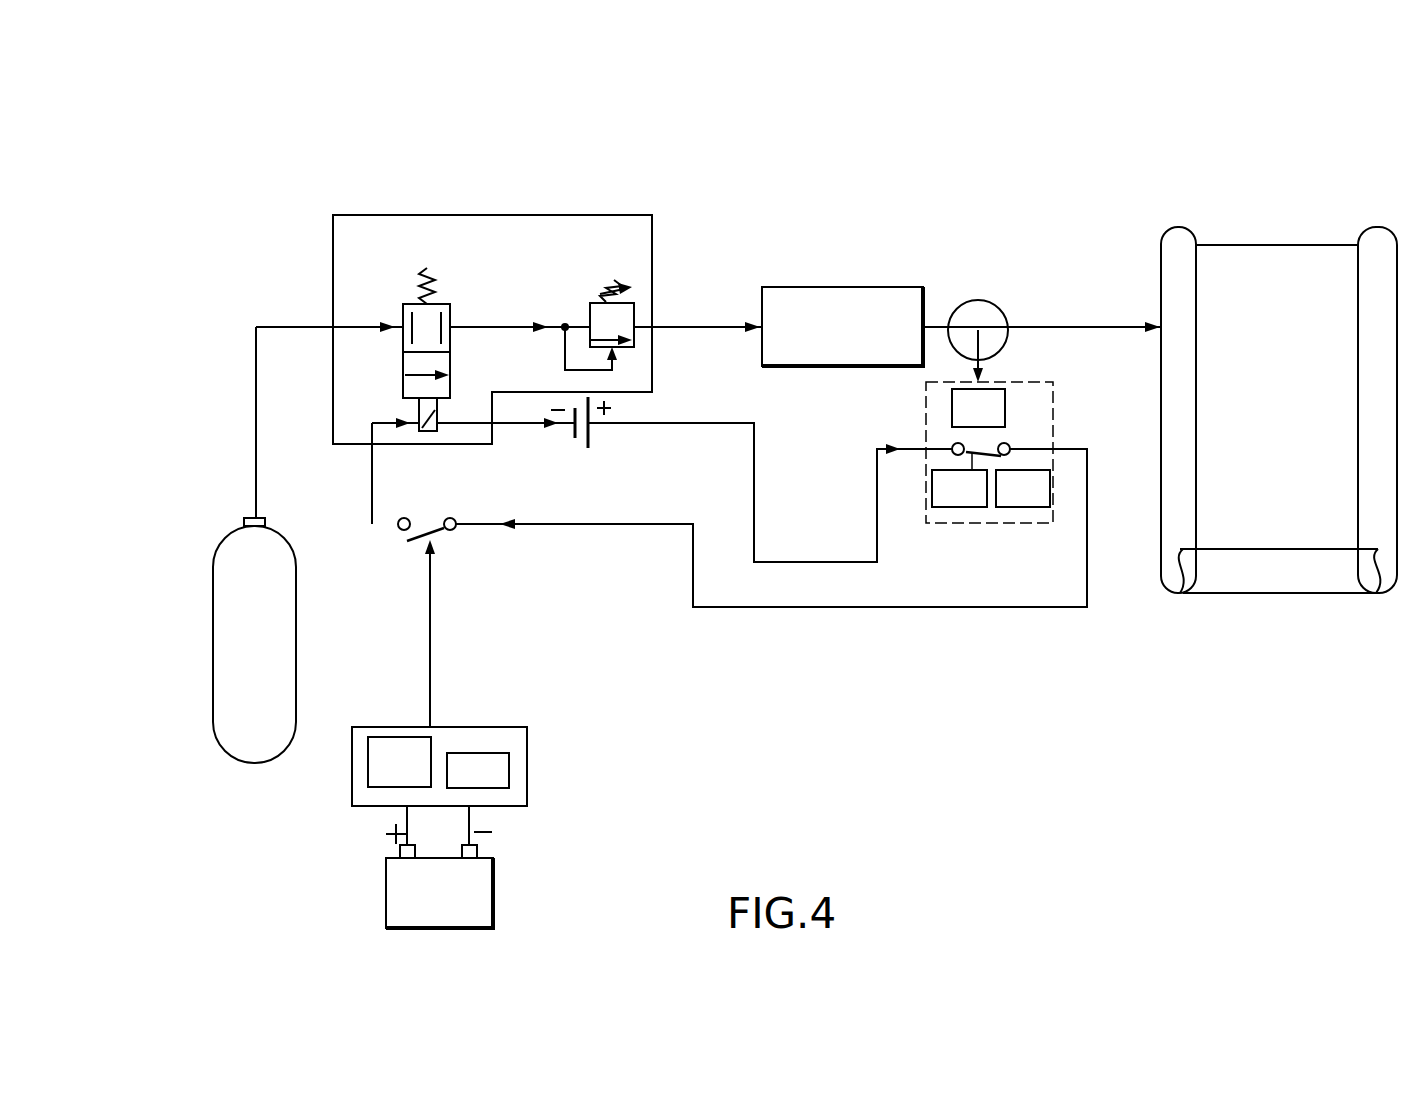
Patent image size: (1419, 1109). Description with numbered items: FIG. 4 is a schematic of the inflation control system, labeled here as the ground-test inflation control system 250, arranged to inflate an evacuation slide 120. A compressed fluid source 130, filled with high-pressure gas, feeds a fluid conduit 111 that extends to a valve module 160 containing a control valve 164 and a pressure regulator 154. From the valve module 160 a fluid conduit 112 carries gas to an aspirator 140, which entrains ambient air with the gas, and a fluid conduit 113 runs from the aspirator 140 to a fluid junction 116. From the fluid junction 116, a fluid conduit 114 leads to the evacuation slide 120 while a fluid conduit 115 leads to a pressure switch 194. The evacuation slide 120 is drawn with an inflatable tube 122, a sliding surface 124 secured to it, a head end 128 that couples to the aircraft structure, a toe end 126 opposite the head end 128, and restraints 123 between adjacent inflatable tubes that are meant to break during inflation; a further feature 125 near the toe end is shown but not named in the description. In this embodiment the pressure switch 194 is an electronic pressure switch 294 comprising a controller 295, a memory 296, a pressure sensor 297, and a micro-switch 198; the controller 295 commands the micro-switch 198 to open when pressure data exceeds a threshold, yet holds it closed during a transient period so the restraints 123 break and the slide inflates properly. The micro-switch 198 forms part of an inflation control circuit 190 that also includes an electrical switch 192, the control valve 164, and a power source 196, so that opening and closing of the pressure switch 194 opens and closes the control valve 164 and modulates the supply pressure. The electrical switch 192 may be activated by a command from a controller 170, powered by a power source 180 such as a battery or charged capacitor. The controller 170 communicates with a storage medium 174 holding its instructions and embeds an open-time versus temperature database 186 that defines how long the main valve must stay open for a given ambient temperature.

The ground-test inflation control system 250 is at (255, 233).
The fluid conduit 111 is at (256, 432).
The compressed fluid source 130 is at (262, 666).
The valve module 160 is at (384, 252).
The control valve 164 is at (453, 312).
The pressure regulator 154 is at (607, 320).
The fluid conduit 112 is at (700, 327).
The aspirator 140 is at (845, 334).
The fluid conduit 113 is at (940, 325).
The fluid junction 116 is at (982, 330).
The fluid conduit 115 is at (990, 358).
The fluid conduit 114 is at (1068, 325).
The evacuation slide 120 is at (1251, 390).
The head end 128 is at (1220, 245).
The inflatable tube 122 is at (1180, 358).
The sliding surface 124 is at (1301, 382).
The restraints 123 is at (1182, 580).
The right support 125 is at (1382, 580).
The toe end 126 is at (1253, 580).
The pressure sensor 297 is at (994, 421).
The micro-switch 198 is at (1005, 447).
The controller 295 is at (959, 488).
The memory 296 is at (1023, 488).
The electronic pressure switch 294 is at (1019, 490).
The pressure switch 194 is at (1016, 487).
The power source 196 is at (598, 430).
The electrical switch 192 is at (442, 532).
The inflation control circuit 190 is at (820, 633).
The controller 170 is at (439, 692).
The open-time versus temperature database 186 is at (418, 775).
The storage medium 174 is at (493, 784).
The power source 180 is at (458, 906).